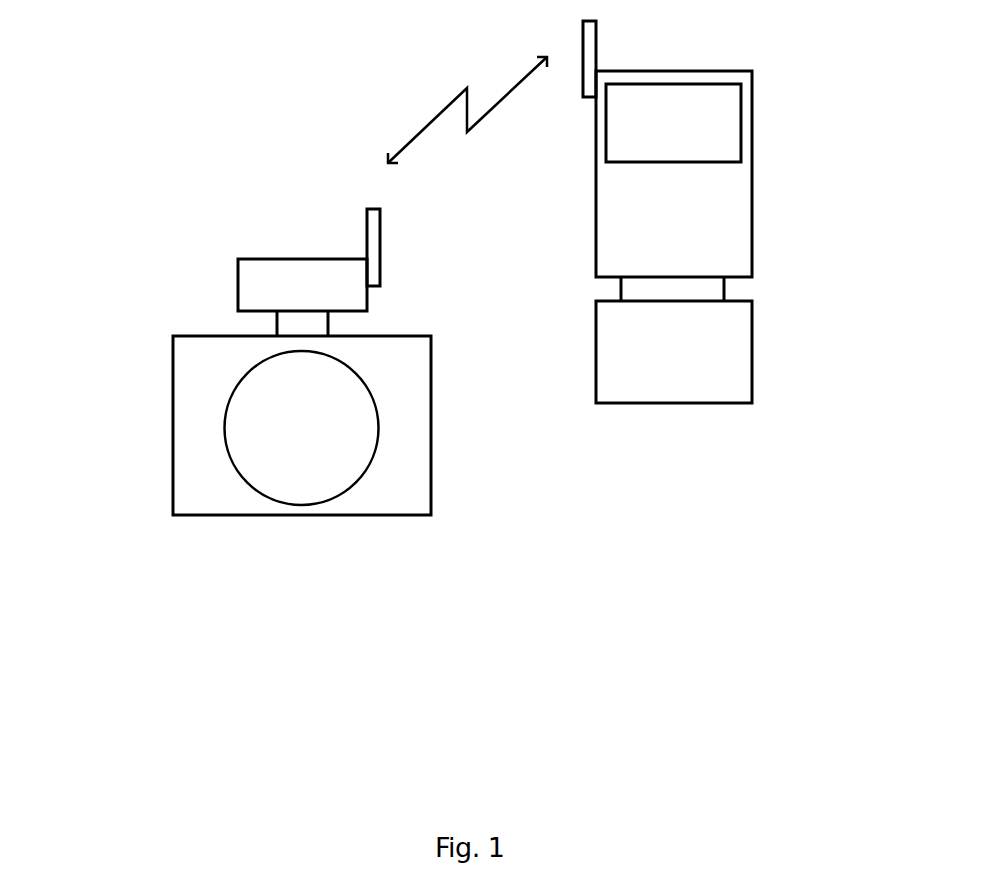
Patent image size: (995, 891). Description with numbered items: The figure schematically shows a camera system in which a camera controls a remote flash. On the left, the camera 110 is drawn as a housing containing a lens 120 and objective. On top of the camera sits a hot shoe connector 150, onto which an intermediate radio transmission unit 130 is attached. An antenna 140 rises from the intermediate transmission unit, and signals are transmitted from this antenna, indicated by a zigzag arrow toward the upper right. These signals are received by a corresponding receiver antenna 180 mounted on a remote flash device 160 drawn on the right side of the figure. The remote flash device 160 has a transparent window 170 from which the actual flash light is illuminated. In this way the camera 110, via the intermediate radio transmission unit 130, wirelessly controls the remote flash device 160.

The camera 110 is at (207, 392).
The lens 120 is at (291, 490).
The intermediate radio transmission unit 130 is at (257, 285).
The antenna 140 is at (365, 238).
The hot shoe connector 150 is at (276, 331).
The remote flash device 160 is at (717, 210).
The transparent window 170 is at (742, 102).
The receiver antenna 180 is at (597, 38).